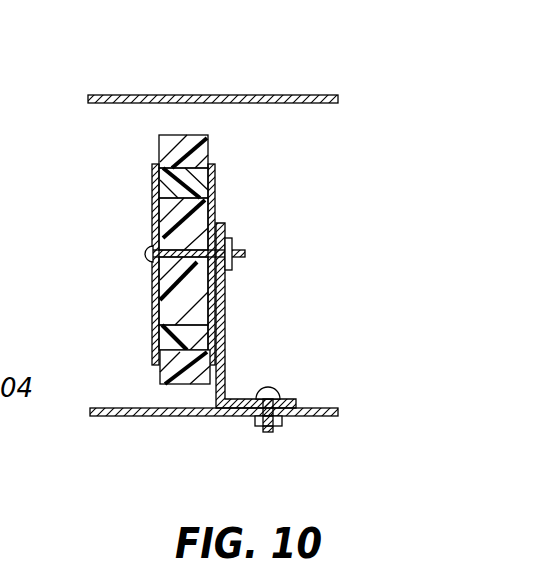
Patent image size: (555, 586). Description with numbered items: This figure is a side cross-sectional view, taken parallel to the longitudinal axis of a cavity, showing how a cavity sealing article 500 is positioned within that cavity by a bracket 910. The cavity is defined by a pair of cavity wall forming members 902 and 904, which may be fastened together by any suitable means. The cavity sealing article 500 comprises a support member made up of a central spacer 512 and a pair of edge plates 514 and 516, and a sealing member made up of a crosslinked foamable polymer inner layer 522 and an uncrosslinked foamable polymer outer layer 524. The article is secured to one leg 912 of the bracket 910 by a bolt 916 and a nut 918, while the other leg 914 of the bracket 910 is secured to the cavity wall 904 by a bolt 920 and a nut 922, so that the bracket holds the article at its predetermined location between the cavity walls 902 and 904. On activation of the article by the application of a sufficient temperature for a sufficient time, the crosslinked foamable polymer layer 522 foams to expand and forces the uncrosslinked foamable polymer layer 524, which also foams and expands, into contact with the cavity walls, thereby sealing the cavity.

The cavity wall forming member 902 is at (222, 95).
The cavity wall forming member 904 is at (128, 417).
The cavity sealing article 500 is at (170, 250).
The uncrosslinked foamable polymer outer layer 524 is at (200, 150).
The crosslinked foamable polymer inner layer 522 is at (205, 182).
The edge plate 514 is at (150, 176).
The edge plate 516 is at (205, 223).
The central spacer 512 is at (150, 218).
The bolt 916 is at (147, 252).
The nut 918 is at (250, 258).
The bracket 910 is at (232, 312).
The leg of the bracket 912 is at (222, 370).
The bolt 920 is at (283, 400).
The nut 922 is at (278, 426).
The other leg of the bracket 914 is at (287, 401).